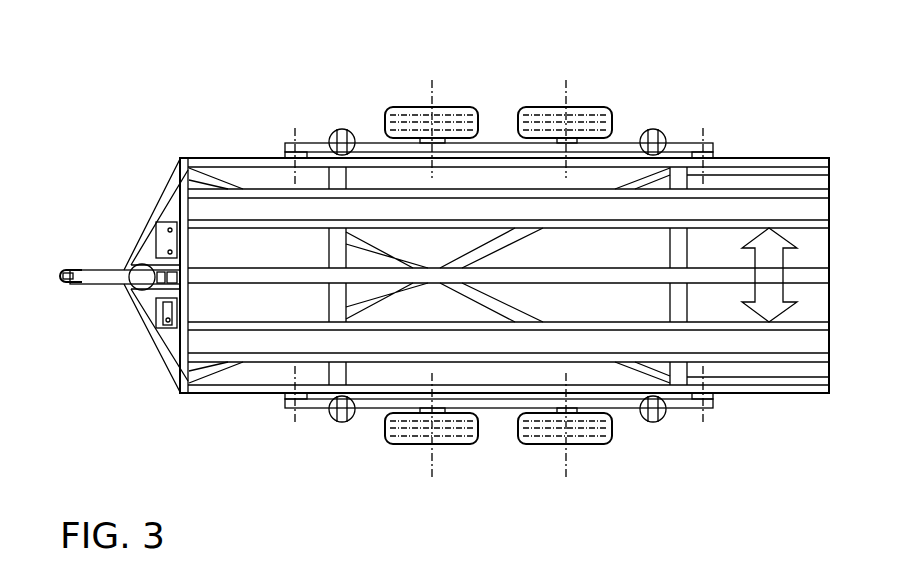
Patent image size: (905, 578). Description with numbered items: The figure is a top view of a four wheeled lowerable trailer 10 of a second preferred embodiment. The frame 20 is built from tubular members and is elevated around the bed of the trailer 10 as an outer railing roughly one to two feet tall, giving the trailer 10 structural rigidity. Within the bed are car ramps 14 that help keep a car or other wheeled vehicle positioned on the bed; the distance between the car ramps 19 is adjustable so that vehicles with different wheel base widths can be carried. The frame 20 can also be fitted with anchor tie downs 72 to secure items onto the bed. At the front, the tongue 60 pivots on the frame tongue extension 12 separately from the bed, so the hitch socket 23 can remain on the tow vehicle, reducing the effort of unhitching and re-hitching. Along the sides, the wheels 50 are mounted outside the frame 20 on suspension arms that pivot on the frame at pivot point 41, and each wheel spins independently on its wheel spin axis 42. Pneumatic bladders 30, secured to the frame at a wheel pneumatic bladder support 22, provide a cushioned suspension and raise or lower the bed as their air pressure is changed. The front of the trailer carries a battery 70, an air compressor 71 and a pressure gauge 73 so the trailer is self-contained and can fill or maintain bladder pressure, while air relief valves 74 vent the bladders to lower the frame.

The trailer 10 is at (228, 72).
The frame tongue extension 12 is at (173, 375).
The car ramps 14 is at (758, 188).
The distance between the car ramps 19 is at (790, 270).
The frame 20 is at (215, 158).
The wheel pneumatic bladder support 22 is at (663, 128).
The hitch socket 23 is at (66, 284).
The pneumatic bladders 30 is at (328, 133).
The pivot point 41 is at (292, 418).
The wheel spin axis 42 is at (433, 457).
The wheels 50 is at (405, 107).
The tongue 60 is at (107, 268).
The battery 70 is at (168, 223).
The air compressor 71 is at (163, 303).
The anchor tie downs 72 is at (232, 186).
The pressure gauge 73 is at (170, 322).
The air relief valves 74 is at (165, 303).